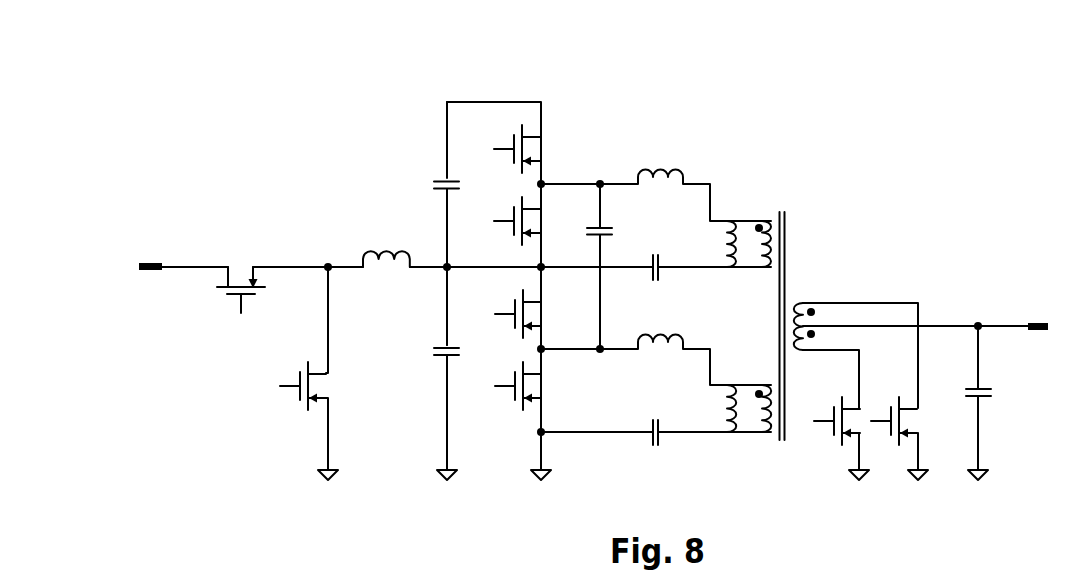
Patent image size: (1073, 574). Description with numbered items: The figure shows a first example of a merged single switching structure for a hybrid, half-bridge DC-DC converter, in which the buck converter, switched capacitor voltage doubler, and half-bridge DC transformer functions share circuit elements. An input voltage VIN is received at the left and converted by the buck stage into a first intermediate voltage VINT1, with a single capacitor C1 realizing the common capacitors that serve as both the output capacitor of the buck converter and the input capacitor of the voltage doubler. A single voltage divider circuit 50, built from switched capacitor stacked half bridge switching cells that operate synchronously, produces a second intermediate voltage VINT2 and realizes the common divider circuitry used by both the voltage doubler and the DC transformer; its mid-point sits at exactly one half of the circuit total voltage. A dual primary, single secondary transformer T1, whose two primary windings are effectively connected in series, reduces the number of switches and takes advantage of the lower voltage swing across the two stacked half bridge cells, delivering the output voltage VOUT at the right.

The voltage divider circuit 50 is at (594, 248).
The capacitor C1 is at (431, 410).
The dual primary, single secondary transformer T1 is at (777, 326).
The input voltage VIN is at (183, 246).
The output voltage VOUT is at (1013, 312).
The first intermediate voltage VINT1 is at (425, 251).
The second intermediate voltage VINT2 is at (494, 105).